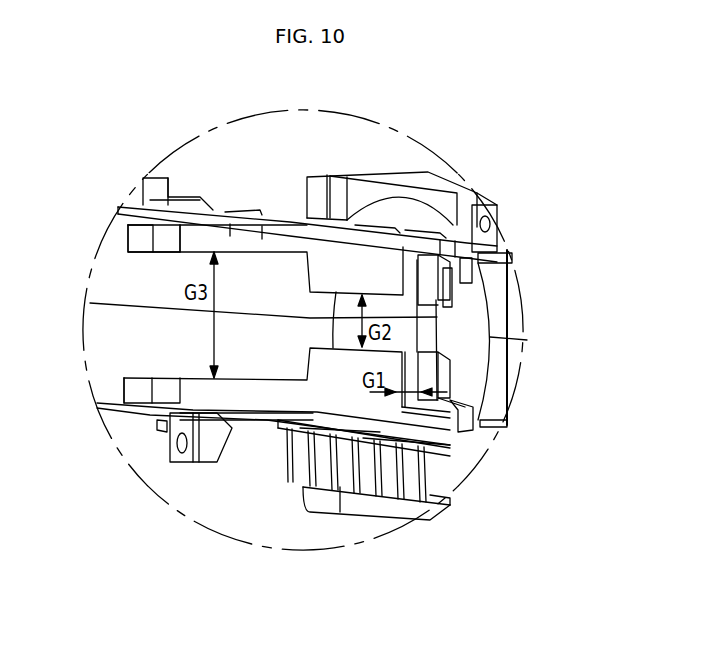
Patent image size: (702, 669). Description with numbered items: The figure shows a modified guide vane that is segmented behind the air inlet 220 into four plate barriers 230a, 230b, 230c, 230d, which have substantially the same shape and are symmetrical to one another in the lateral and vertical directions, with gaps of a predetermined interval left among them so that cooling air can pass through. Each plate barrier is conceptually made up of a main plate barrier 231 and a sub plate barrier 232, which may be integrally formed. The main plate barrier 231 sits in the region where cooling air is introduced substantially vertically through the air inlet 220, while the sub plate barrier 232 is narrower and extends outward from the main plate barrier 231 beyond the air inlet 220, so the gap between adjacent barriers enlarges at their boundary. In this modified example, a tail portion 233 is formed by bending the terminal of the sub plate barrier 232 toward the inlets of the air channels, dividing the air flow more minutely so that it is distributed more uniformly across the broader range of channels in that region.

The air inlet 220 is at (444, 198).
The first plate barrier 230a is at (332, 269).
The second plate barrier 230b is at (433, 276).
The third plate barrier 230c is at (273, 496).
The fourth plate barrier 230d is at (440, 418).
The main plate barrier 231 is at (342, 403).
The sub plate barrier 232 is at (247, 395).
The tail portion 233 is at (137, 239).